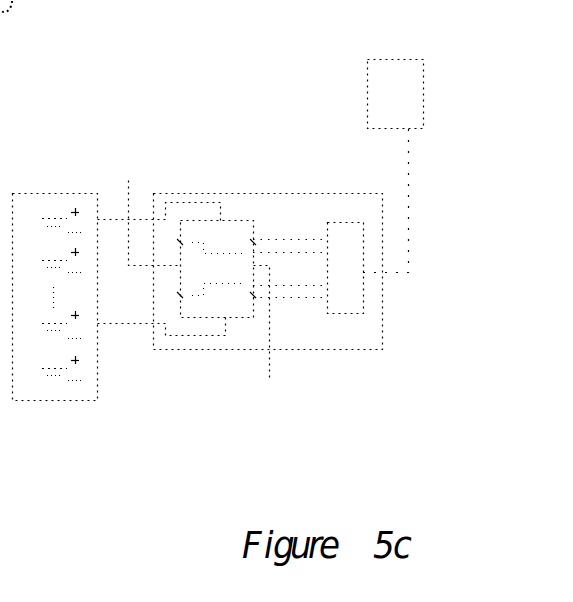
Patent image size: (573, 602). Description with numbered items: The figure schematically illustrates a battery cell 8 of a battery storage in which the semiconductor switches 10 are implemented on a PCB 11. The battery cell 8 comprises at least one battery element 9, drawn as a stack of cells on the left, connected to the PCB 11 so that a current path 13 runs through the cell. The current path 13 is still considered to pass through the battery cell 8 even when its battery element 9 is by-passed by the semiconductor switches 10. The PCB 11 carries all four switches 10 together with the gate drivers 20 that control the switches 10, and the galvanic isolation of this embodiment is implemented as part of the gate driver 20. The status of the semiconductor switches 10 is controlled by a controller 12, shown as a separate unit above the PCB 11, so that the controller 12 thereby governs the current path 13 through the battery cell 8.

The battery cell 8 is at (218, 270).
The battery element 9 is at (53, 218).
The semiconductor switches 10 is at (253, 291).
The PCB 11 is at (239, 194).
The controller 12 is at (366, 73).
The current path 13 is at (128, 180).
The gate drivers 20 is at (338, 222).